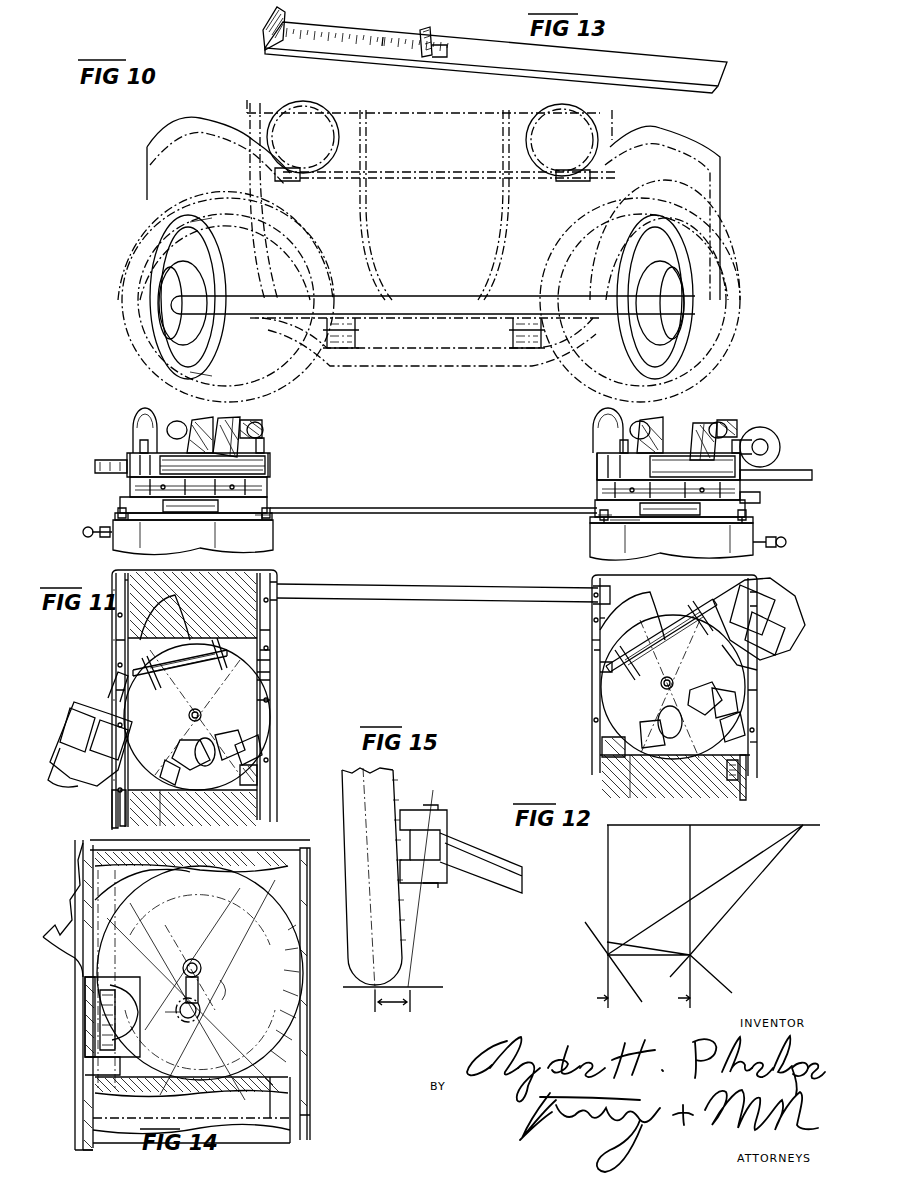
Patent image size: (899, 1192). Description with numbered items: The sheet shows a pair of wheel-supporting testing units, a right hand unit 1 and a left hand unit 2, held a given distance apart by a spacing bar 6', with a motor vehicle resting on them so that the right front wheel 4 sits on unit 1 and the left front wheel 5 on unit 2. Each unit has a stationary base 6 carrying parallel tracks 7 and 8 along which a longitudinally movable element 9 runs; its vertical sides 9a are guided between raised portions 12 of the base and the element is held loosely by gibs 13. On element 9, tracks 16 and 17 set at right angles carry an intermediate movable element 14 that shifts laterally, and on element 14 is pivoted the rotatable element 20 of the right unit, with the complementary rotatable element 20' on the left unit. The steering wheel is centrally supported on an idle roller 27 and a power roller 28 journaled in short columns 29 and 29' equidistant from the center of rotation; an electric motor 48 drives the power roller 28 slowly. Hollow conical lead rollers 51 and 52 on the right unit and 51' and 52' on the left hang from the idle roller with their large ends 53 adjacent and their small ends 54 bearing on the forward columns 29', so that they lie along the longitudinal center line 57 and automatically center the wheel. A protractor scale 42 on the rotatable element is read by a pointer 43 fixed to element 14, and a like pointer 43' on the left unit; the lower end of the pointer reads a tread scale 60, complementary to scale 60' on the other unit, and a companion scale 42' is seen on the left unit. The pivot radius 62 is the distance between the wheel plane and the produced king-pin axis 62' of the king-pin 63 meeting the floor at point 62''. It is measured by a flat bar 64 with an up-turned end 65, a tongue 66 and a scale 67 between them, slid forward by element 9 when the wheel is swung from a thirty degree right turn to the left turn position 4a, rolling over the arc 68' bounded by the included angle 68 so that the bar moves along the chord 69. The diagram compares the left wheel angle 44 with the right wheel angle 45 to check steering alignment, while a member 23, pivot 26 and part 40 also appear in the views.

In FIG. 10, the right hand unit 1 is at (272, 522).
In FIG. 11, the right hand unit 1 is at (184, 617).
In FIG. 14, the right hand unit 1 is at (142, 884).
In FIG. 10, the left hand unit 2 is at (620, 521).
In FIG. 12, the left hand unit 2 is at (664, 618).
In FIG. 10, the right front wheel 4 is at (118, 303).
In FIG. 11, the right front wheel 4 is at (184, 598).
In FIG. 15, the right front wheel 4 is at (395, 796).
In FIG. 14, the right front wheel 4 is at (240, 956).
In FIG. 14, the left turn position of wheel 4a is at (250, 1032).
In FIG. 10, the left front wheel 5 is at (745, 313).
In FIG. 12, the left front wheel 5 is at (762, 742).
In FIG. 10, the stationary base 6 is at (433, 541).
In FIG. 11, the stationary base 6 is at (184, 704).
In FIG. 12, the stationary base 6 is at (692, 674).
In FIG. 14, the stationary base 6 is at (176, 995).
In FIG. 10, the spacing bar 6' is at (433, 498).
In FIG. 11, the spacing bar 6' is at (443, 584).
In FIG. 10, the track 7 is at (118, 516).
In FIG. 11, the track 7 is at (126, 624).
In FIG. 12, the track 7 is at (600, 620).
In FIG. 14, the track 7 is at (88, 1152).
In FIG. 10, the track 8 is at (270, 520).
In FIG. 11, the track 8 is at (272, 620).
In FIG. 12, the track 8 is at (760, 597).
In FIG. 14, the track 8 is at (290, 1130).
In FIG. 10, the longitudinally movable element 9 is at (125, 502).
In FIG. 11, the longitudinally movable element 9 is at (272, 640).
In FIG. 12, the longitudinally movable element 9 is at (594, 640).
In FIG. 14, the longitudinally movable element 9 is at (270, 1092).
In FIG. 10, the vertical sides 9a is at (268, 503).
In FIG. 10, the raised portions 12 is at (120, 518).
In FIG. 10, the gibs 13 is at (118, 512).
In FIG. 11, the gibs 13 is at (116, 652).
In FIG. 12, the gibs 13 is at (598, 650).
In FIG. 14, the gibs 13 is at (80, 1150).
In FIG. 10, the intermediate movable element 14 is at (268, 490).
In FIG. 10, the track 16 is at (125, 488).
In FIG. 11, the track 16 is at (262, 770).
In FIG. 12, the track 16 is at (605, 746).
In FIG. 11, the track 17 is at (262, 665).
In FIG. 12, the track 17 is at (605, 666).
In FIG. 10, the rotatable element 20 is at (168, 461).
In FIG. 11, the rotatable element 20 is at (224, 717).
In FIG. 14, the rotatable element 20 is at (84, 1010).
In FIG. 10, the rotatable element 20' is at (629, 455).
In FIG. 12, the rotatable element 20' is at (643, 687).
In FIG. 14, the bracket 23 is at (118, 1058).
In FIG. 11, the pivot 26 is at (202, 713).
In FIG. 12, the pivot 26 is at (662, 688).
In FIG. 14, the pivot 26 is at (194, 958).
In FIG. 10, the idle roller 27 is at (244, 425).
In FIG. 10, the power roller 28 is at (140, 410).
In FIG. 11, the power roller 28 is at (190, 664).
In FIG. 12, the power roller 28 is at (650, 620).
In FIG. 10, the columns 29 is at (408, 442).
In FIG. 11, the columns 29 is at (208, 651).
In FIG. 12, the columns 29 is at (643, 626).
In FIG. 10, the forward columns 29' is at (448, 432).
In FIG. 10, the adjusting bolt 40 is at (100, 537).
In FIG. 10, the protractor scale 42 is at (259, 458).
In FIG. 10, the gear ring extension 42' is at (783, 463).
In FIG. 10, the pointer 43 is at (259, 477).
In FIG. 11, the pointer 43 is at (192, 819).
In FIG. 10, the left index finger 43' is at (639, 476).
In FIG. 12, the left index finger 43' is at (675, 786).
In FIG. 12, the angle 44 is at (698, 1000).
In FIG. 12, the angle 45 is at (613, 1000).
In FIG. 10, the electric motor 48 is at (781, 447).
In FIG. 11, the electric motor 48 is at (95, 745).
In FIG. 12, the electric motor 48 is at (770, 636).
In FIG. 10, the lead roller 51 is at (201, 419).
In FIG. 11, the lead roller 51 is at (186, 752).
In FIG. 10, the lead roller 51' is at (656, 424).
In FIG. 12, the lead roller 51' is at (658, 721).
In FIG. 10, the lead roller 52 is at (288, 419).
In FIG. 11, the lead roller 52 is at (264, 738).
In FIG. 10, the lead roller 52' is at (761, 413).
In FIG. 12, the lead roller 52' is at (723, 689).
In FIG. 10, the large ends 53 is at (226, 421).
In FIG. 11, the large ends 53 is at (180, 745).
In FIG. 12, the large ends 53 is at (692, 686).
In FIG. 10, the small ends 54 is at (180, 421).
In FIG. 11, the small ends 54 is at (168, 762).
In FIG. 12, the small ends 54 is at (737, 722).
In FIG. 11, the longitudinal center line 57 is at (190, 712).
In FIG. 12, the longitudinal center line 57 is at (662, 680).
In FIG. 15, the longitudinal center line 57 is at (372, 885).
In FIG. 14, the longitudinal center line 57 is at (140, 903).
In FIG. 10, the scale 60 is at (240, 550).
In FIG. 11, the scale 60 is at (159, 819).
In FIG. 10, the scale 60' is at (590, 552).
In FIG. 12, the scale 60' is at (591, 688).
In FIG. 15, the pivot radius 62 is at (393, 1008).
In FIG. 15, the king-pin axis 62' is at (433, 888).
In FIG. 14, the king-pin axis 62' is at (242, 985).
In FIG. 15, the point 62'' is at (440, 970).
In FIG. 15, the king-pin 63 is at (441, 807).
In FIG. 13, the flat bar 64 is at (626, 62).
In FIG. 11, the flat bar 64 is at (113, 800).
In FIG. 12, the flat bar 64 is at (740, 770).
In FIG. 14, the flat bar 64 is at (92, 988).
In FIG. 13, the up-turned end 65 is at (262, 30).
In FIG. 10, the up-turned end 65 is at (142, 548).
In FIG. 11, the up-turned end 65 is at (125, 815).
In FIG. 12, the up-turned end 65 is at (730, 585).
In FIG. 14, the up-turned end 65 is at (95, 1110).
In FIG. 13, the tongue 66 is at (431, 29).
In FIG. 14, the tongue 66 is at (105, 1000).
In FIG. 13, the scale 67 is at (384, 35).
In FIG. 14, the scale 67 is at (100, 1033).
In FIG. 14, the included angle 68 is at (156, 1009).
In FIG. 14, the arc 68' is at (173, 987).
In FIG. 14, the chord 69 is at (198, 1008).